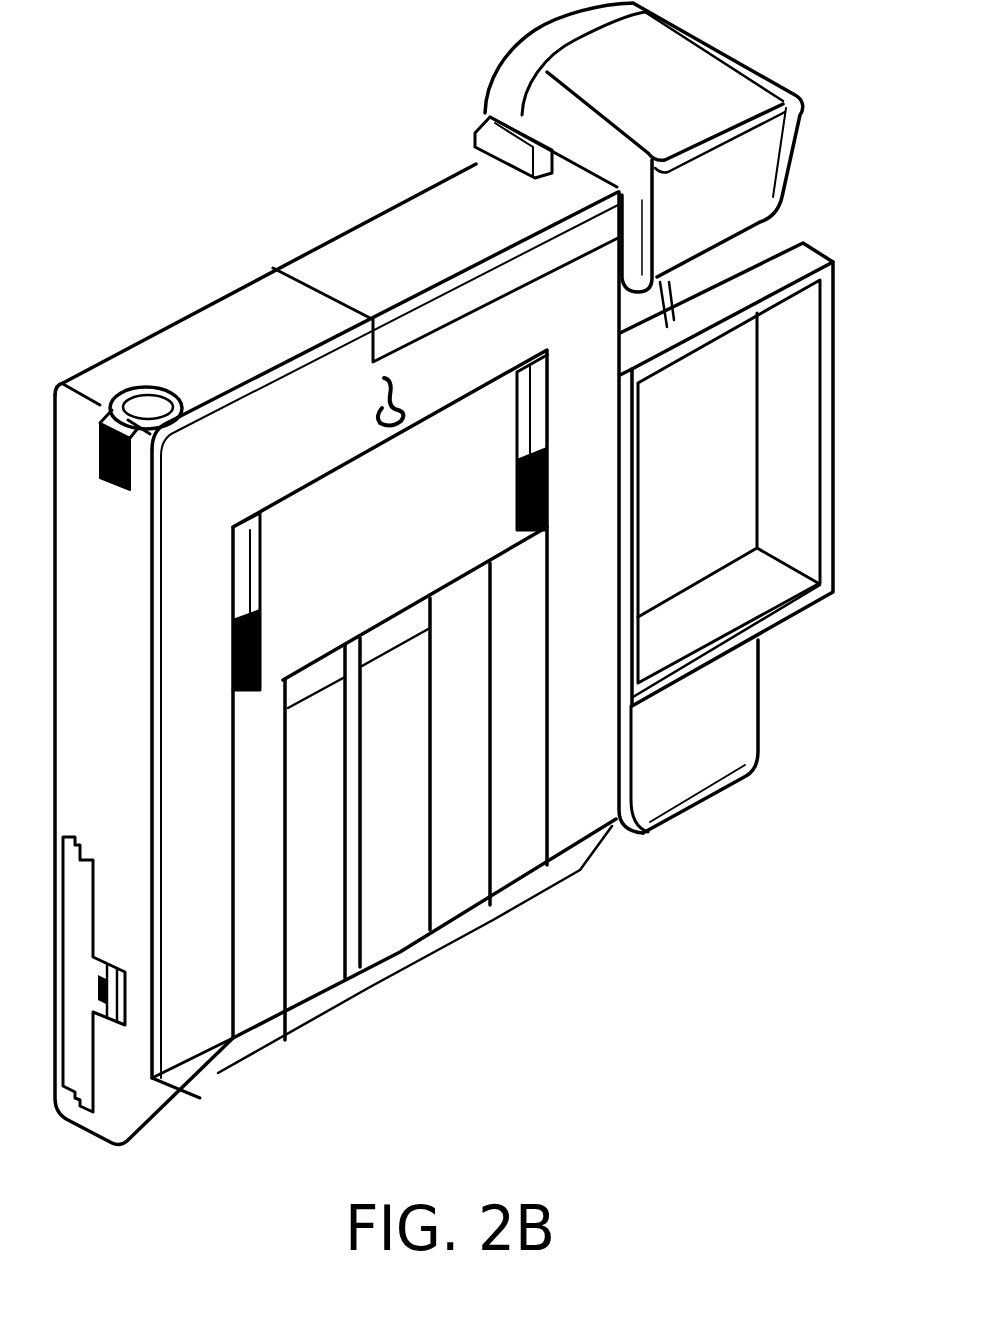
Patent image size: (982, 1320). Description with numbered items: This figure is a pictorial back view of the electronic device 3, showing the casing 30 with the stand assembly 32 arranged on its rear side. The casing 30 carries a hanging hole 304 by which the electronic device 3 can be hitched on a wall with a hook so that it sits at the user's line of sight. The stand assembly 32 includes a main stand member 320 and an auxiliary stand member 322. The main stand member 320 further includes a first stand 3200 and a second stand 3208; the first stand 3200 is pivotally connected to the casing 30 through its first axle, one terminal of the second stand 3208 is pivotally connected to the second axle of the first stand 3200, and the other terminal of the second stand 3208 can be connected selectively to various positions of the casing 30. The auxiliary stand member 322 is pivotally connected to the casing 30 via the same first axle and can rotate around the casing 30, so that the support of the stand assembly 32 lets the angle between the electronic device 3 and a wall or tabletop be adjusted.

The electronic device 3 is at (145, 115).
The casing 30 is at (190, 342).
The hanging hole 304 is at (367, 385).
The stand assembly 32 is at (707, 904).
The main stand member 320 is at (575, 976).
The first stand 3200 is at (263, 952).
The second stand 3208 is at (462, 873).
The auxiliary stand member 322 is at (247, 578).